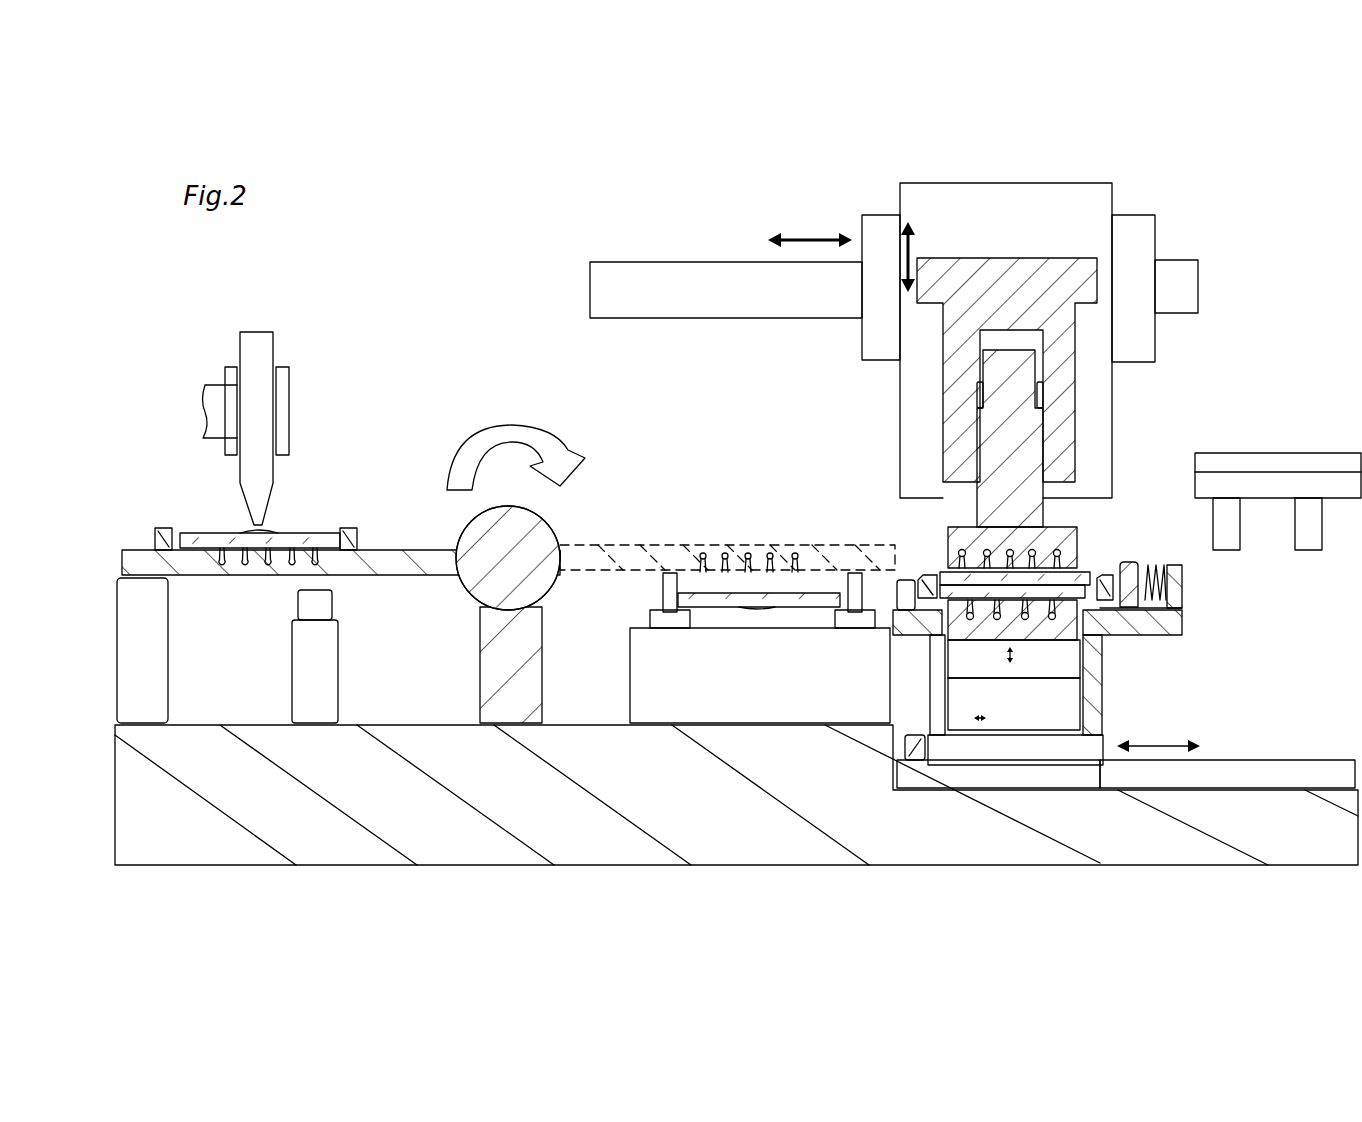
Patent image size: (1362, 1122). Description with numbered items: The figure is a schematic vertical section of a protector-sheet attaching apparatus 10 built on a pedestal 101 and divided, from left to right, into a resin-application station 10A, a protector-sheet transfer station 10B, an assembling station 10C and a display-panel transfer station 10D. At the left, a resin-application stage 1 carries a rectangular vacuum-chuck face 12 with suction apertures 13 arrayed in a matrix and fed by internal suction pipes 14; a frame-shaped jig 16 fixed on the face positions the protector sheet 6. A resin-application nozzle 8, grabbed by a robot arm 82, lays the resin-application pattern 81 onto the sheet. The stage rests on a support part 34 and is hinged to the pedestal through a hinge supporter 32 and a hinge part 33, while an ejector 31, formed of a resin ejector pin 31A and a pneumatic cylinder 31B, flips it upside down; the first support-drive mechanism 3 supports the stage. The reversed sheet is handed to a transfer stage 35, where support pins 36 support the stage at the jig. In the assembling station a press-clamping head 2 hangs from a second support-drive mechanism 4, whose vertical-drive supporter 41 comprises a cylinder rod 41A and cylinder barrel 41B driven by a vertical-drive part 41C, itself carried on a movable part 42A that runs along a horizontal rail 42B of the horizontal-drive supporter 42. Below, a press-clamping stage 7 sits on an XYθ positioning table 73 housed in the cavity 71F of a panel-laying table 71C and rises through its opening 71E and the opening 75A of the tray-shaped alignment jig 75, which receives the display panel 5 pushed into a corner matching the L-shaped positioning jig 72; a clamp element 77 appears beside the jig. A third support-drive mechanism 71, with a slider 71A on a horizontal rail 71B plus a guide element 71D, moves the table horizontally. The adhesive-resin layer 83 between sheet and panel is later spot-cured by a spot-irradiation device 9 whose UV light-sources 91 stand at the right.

The protector-sheet attaching apparatus 10 is at (165, 243).
The pedestal 101 is at (257, 735).
The resin-application stage 1 is at (345, 560).
The vacuum-chuck face 12 is at (335, 578).
The suction apertures 13 is at (222, 556).
The suction pipes 14 is at (177, 567).
The frame-shaped jig 16 is at (163, 530).
The protector sheet 6 is at (325, 540).
The resin-application nozzle 8 is at (252, 483).
The resin-application pattern 81 is at (268, 528).
The robot arm 82 is at (215, 385).
The support part 34 is at (160, 652).
The ejector 31 is at (398, 640).
The ejector pin 31A is at (333, 605).
The pneumatic cylinder 31B is at (330, 665).
The first support-drive mechanism 3 is at (619, 464).
The hinge supporter 32 is at (486, 637).
The hinge part 33 is at (517, 568).
The transfer stage 35 is at (651, 672).
The support pins 36 is at (665, 603).
The press-clamping head 2 is at (1078, 540).
The display panel 5 is at (950, 585).
The press-clamping stage 7 is at (965, 632).
The L-shaped positioning jig 72 is at (898, 596).
The alignment jig 75 is at (926, 580).
The opening 75A is at (1090, 627).
The spring-loaded clamp 77 is at (1128, 570).
The third support-drive mechanism 71 is at (1240, 708).
The slider 71A is at (1090, 742).
The horizontal rail 71B is at (1248, 773).
The panel-laying table 71C is at (1128, 625).
The guide roller 71D is at (916, 745).
The opening 71E is at (1098, 660).
The cavity 71F is at (945, 677).
The positioning table 73 is at (1073, 716).
The adhesive-resin layer 83 is at (1038, 587).
The second support-drive mechanism 4 is at (1302, 268).
The vertical-drive supporter 41 is at (1209, 388).
The cylinder rod 41A is at (1067, 410).
The cylinder barrel 41B is at (1032, 512).
The vertical-drive part 41C is at (1095, 358).
The horizontal-drive supporter 42 is at (1228, 204).
The movable part 42A is at (1148, 228).
The horizontal rail 42B is at (1180, 262).
The spot-irradiation device 9 is at (1318, 466).
The spot-wise UV light-sources 91 is at (1240, 527).
The resin-application station 10A is at (395, 872).
The protector-sheet transfer station 10B is at (880, 872).
The assembling station 10C is at (1140, 872).
The display-panel transfer station 10D is at (1147, 872).